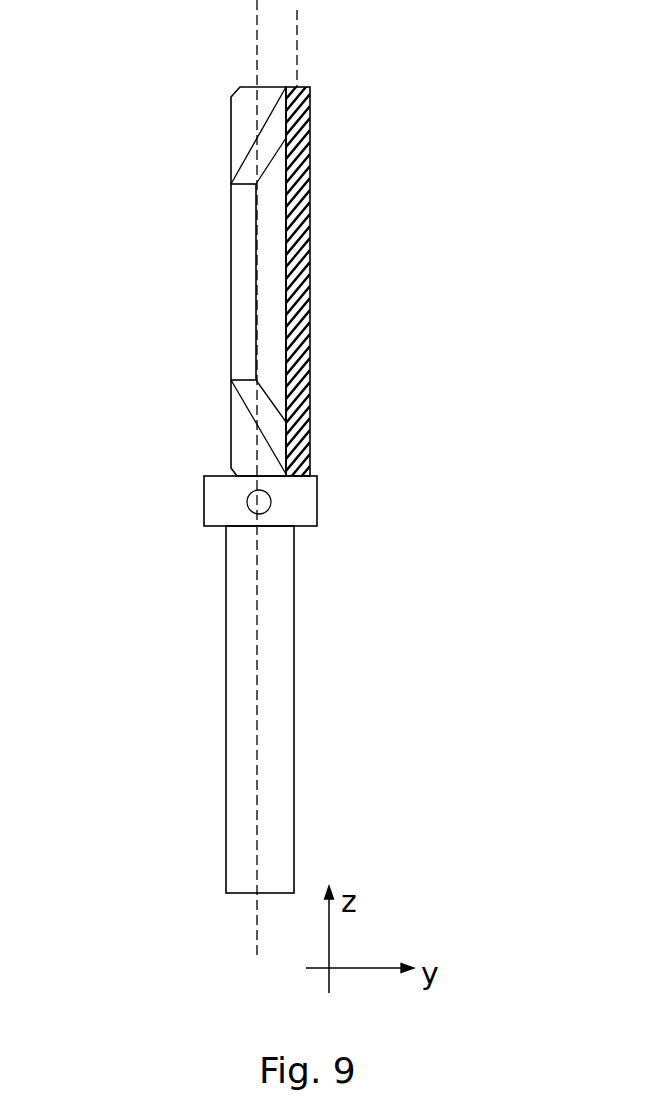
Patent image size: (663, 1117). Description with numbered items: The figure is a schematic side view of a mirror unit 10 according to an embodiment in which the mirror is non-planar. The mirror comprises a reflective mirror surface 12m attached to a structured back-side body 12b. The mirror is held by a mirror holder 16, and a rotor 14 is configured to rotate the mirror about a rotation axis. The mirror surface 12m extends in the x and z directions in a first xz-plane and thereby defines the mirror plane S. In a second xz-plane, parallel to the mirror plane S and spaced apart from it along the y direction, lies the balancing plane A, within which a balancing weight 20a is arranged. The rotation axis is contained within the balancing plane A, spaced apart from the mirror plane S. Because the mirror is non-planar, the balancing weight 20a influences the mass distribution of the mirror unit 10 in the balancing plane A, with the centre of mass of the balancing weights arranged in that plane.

The mirror unit 10 is at (295, 481).
The structured back-side body 12b is at (231, 293).
The reflective mirror surface 12m is at (310, 203).
The rotor 14 is at (295, 803).
The mirror holder 16 is at (317, 500).
The balancing weight 20a is at (267, 513).
The balancing plane A is at (257, 82).
The mirror plane S is at (298, 33).